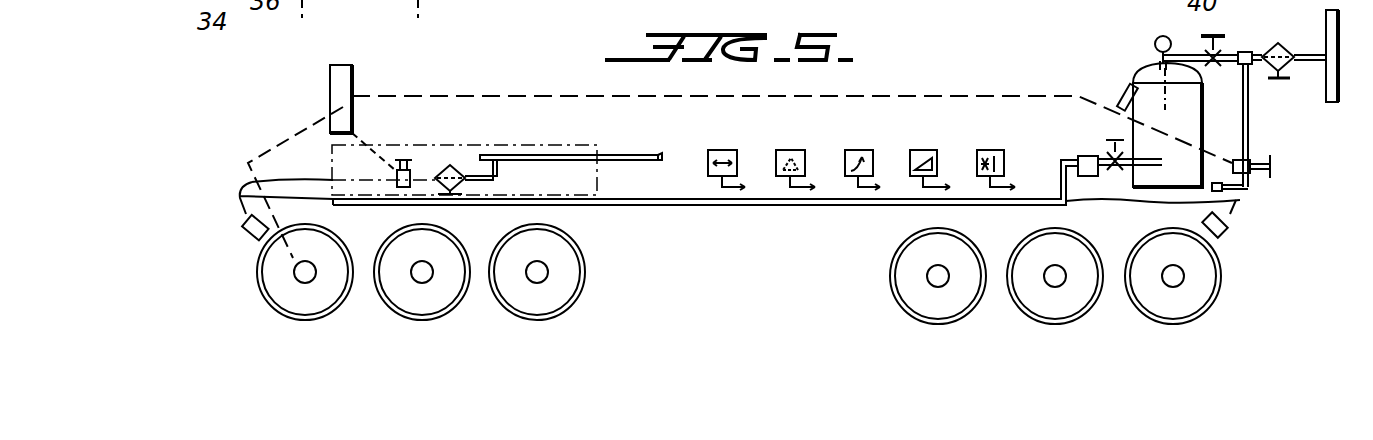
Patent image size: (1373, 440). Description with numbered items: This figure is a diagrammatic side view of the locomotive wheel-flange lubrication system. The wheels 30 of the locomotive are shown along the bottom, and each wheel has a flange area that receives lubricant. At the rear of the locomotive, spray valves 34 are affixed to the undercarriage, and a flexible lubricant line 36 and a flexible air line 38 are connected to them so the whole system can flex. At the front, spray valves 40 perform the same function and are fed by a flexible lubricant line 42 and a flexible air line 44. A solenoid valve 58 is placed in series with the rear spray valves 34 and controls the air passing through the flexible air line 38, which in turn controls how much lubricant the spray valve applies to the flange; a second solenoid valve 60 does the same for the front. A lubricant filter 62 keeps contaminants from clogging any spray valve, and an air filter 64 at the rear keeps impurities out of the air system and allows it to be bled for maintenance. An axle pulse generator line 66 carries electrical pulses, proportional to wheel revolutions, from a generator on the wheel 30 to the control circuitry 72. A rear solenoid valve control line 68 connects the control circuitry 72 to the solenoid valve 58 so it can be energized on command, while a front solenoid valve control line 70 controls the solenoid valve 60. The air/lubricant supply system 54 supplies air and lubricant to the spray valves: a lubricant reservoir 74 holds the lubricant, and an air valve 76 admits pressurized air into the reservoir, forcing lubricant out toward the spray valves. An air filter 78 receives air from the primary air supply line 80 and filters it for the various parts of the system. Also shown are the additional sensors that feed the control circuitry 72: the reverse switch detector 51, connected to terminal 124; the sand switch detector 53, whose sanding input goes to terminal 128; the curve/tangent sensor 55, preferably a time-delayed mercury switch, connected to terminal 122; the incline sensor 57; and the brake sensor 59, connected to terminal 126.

The wheels 30 is at (378, 342).
The spray valves 34 is at (243, 236).
The flexible lubricant line 36 is at (306, 200).
The flexible air line 38 is at (252, 184).
The spray valves 40 is at (1222, 232).
The flexible lubricant line 42 is at (1086, 200).
The flexible air line 44 is at (1225, 190).
The reverse switch detector 51 is at (722, 150).
The sand switch detector 53 is at (790, 150).
The curve/tangent sensor 55 is at (858, 150).
The incline sensor 57 is at (924, 150).
The brake sensor 59 is at (991, 150).
The air/lubricant supply system 54 is at (1110, 76).
The solenoid valve 58 is at (408, 160).
The solenoid valve 60 is at (1255, 162).
The lubricant filter 62 is at (1083, 155).
The air filter 64 is at (457, 172).
The axle pulse generator line 66 is at (302, 116).
The rear solenoid valve control line 68 is at (366, 144).
The front solenoid valve control line 70 is at (432, 95).
The control circuitry 72 is at (343, 64).
The lubricant reservoir 74 is at (1198, 131).
The air valve 76 is at (1216, 66).
The air filter 78 is at (1290, 37).
The primary air supply line 80 is at (1326, 88).
The terminal 122 is at (906, 189).
The terminal 124 is at (773, 189).
The terminal 126 is at (1043, 189).
The terminal 128 is at (841, 189).